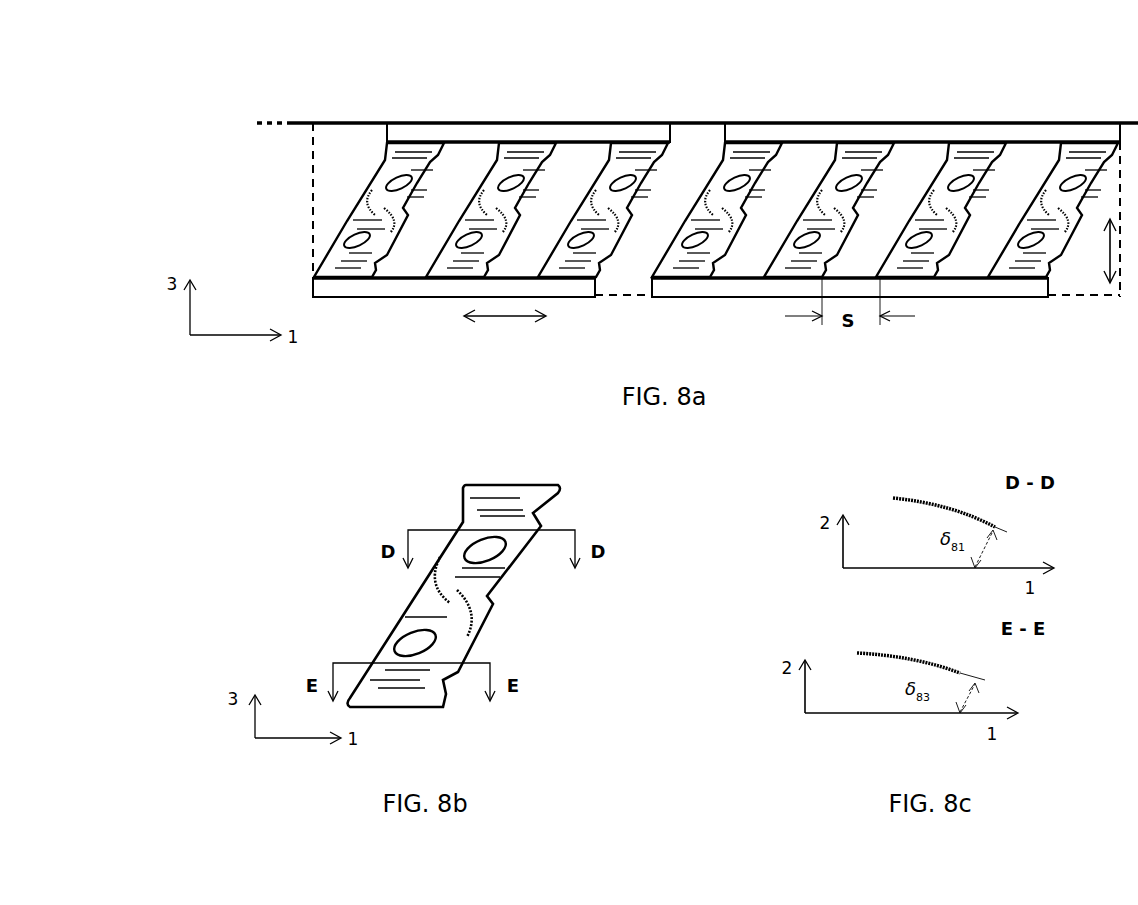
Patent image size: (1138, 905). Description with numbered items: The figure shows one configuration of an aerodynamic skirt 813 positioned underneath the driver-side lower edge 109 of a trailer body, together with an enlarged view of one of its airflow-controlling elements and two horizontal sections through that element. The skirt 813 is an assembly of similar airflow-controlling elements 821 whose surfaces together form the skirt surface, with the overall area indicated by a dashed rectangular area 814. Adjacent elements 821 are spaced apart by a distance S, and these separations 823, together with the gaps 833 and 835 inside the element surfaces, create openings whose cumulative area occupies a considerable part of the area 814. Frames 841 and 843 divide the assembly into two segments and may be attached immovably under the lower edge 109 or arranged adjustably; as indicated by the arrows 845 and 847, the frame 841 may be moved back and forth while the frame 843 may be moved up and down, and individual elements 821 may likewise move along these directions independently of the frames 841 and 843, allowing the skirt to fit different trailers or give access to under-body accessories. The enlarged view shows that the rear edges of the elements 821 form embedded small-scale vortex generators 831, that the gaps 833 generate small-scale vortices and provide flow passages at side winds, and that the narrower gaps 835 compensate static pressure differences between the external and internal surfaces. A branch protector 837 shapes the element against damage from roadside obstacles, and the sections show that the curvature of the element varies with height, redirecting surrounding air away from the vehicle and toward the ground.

In FIG. 8a, the driver-side lower edge 109 is at (313, 123).
In FIG. 8a, the aerodynamic skirt 813 is at (270, 170).
In FIG. 8a, the dashed rectangular area 814 is at (313, 215).
In FIG. 8a, the airflow-controlling element 821 is at (415, 160).
In FIG. 8b, the airflow-controlling element 821 is at (537, 496).
In FIG. 8a, the separation 823 is at (467, 158).
In FIG. 8a, the frame 841 is at (587, 136).
In FIG. 8a, the frame 843 is at (843, 136).
In FIG. 8a, the arrow 845 is at (505, 328).
In FIG. 8a, the arrow 847 is at (1089, 251).
In FIG. 8b, the vortex generator 831 is at (493, 598).
In FIG. 8b, the gap 833 is at (400, 635).
In FIG. 8b, the gap 835 is at (470, 617).
In FIG. 8b, the branch protector 837 is at (460, 515).